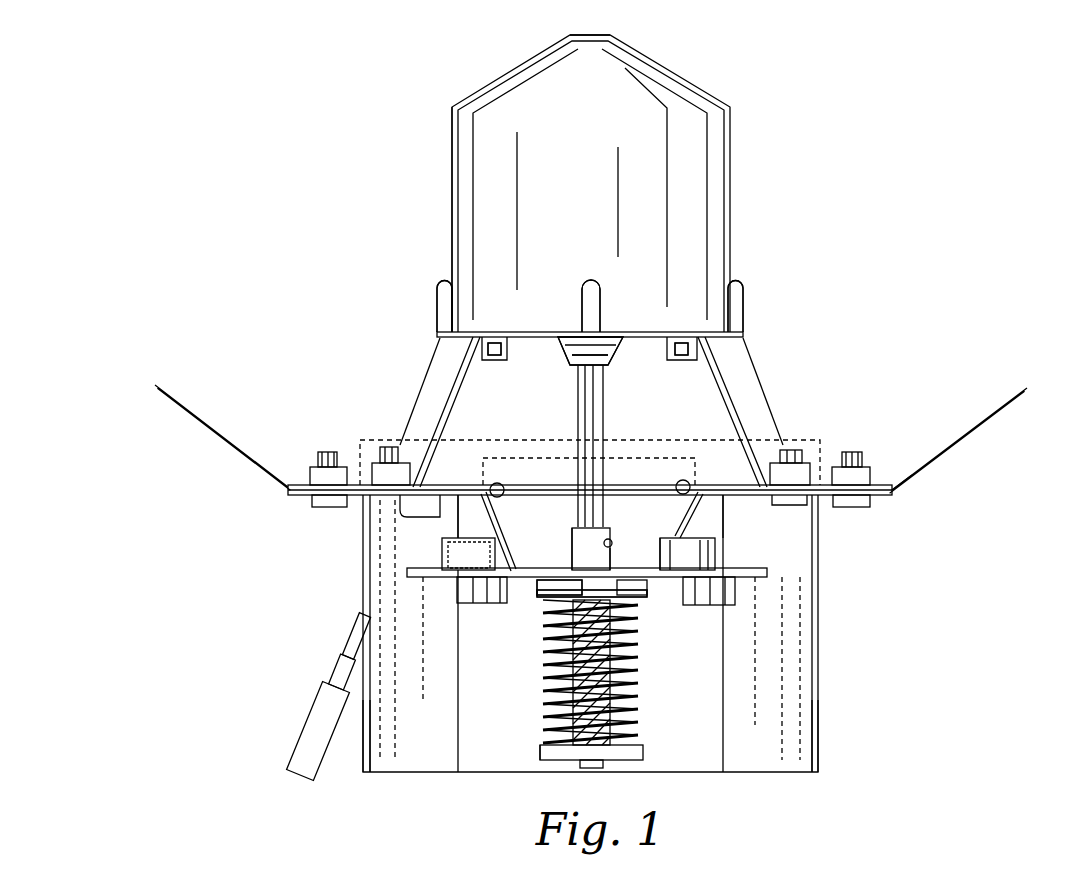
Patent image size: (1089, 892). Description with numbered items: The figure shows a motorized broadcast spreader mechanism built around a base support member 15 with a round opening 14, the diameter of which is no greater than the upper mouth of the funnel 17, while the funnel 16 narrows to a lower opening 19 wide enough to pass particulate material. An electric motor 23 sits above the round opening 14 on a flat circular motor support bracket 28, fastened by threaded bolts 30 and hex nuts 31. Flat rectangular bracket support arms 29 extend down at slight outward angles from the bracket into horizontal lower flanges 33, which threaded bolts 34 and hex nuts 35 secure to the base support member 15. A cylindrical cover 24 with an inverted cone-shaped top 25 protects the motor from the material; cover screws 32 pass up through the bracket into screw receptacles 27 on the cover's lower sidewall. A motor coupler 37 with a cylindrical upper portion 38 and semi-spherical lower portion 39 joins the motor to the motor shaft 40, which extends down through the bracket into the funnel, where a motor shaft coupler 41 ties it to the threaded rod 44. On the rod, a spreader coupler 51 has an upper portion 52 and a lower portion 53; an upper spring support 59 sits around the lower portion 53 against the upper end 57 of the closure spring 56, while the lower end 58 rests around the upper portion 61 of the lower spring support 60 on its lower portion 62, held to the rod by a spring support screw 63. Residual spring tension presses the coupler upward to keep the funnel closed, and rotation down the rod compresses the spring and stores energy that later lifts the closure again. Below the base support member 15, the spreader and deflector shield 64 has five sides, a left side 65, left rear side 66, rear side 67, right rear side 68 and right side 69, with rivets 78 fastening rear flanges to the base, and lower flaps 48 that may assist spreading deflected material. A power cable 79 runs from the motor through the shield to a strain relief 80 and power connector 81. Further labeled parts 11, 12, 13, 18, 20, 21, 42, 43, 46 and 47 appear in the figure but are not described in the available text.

The arm 11 is at (220, 437).
The frame plate 12 is at (290, 494).
The phantom outline 13 is at (590, 459).
The round opening 14 is at (589, 468).
The base support member 15 is at (895, 480).
The funnel 16 is at (527, 540).
The funnel 17 is at (656, 568).
The inner wall 18 is at (728, 527).
The lower opening of the funnel 19 is at (556, 555).
The lower nut 20 is at (318, 507).
The washer 21 is at (310, 476).
The electric motor 23 is at (591, 183).
The cylindrical cover 24 is at (452, 215).
The inverted cone-shaped top 25 is at (588, 43).
The screw receptacles 27 is at (440, 285).
The motor support bracket 28 is at (530, 338).
The bracket support arms 29 is at (430, 370).
The threaded bolts 30 is at (492, 361).
The hex nuts 31 is at (508, 362).
The cover screws 32 is at (438, 325).
The lower flanges 33 is at (358, 466).
The threaded bolts 34 is at (412, 510).
The hex nuts 35 is at (412, 478).
The motor coupler 37 is at (572, 366).
The cylindrical upper portion 38 is at (615, 345).
The semi-spherical lower portion 39 is at (612, 360).
The motor shaft 40 is at (578, 410).
The motor shaft coupler 41 is at (591, 549).
The nut 42 is at (612, 541).
The block wall 43 is at (612, 552).
The threaded rod 44 is at (543, 662).
The ledge 46 is at (541, 568).
The shelf 47 is at (462, 540).
The lower flaps 48 is at (478, 606).
The spreader coupler 51 is at (548, 628).
The spreader coupler's upper portion 52 is at (648, 592).
The spreader coupler's lower portion 53 is at (630, 640).
The closure spring 56 is at (543, 689).
The upper end of the closure spring 57 is at (641, 604).
The lower end of the closure spring 58 is at (545, 740).
The upper spring support 59 is at (542, 600).
The lower spring support 60 is at (558, 760).
The lower spring support's upper portion 61 is at (638, 730).
The lower spring support's lower portion 62 is at (645, 752).
The spring support screw 63 is at (600, 768).
The spreader and deflector shield 64 is at (822, 625).
The left side 65 is at (366, 758).
The left rear side 66 is at (407, 630).
The rear side 67 is at (590, 633).
The right rear side 68 is at (770, 668).
The right side 69 is at (818, 735).
The rivets 78 is at (504, 490).
The power cable 79 is at (355, 625).
The strain relief 80 is at (335, 668).
The power connector 81 is at (305, 718).